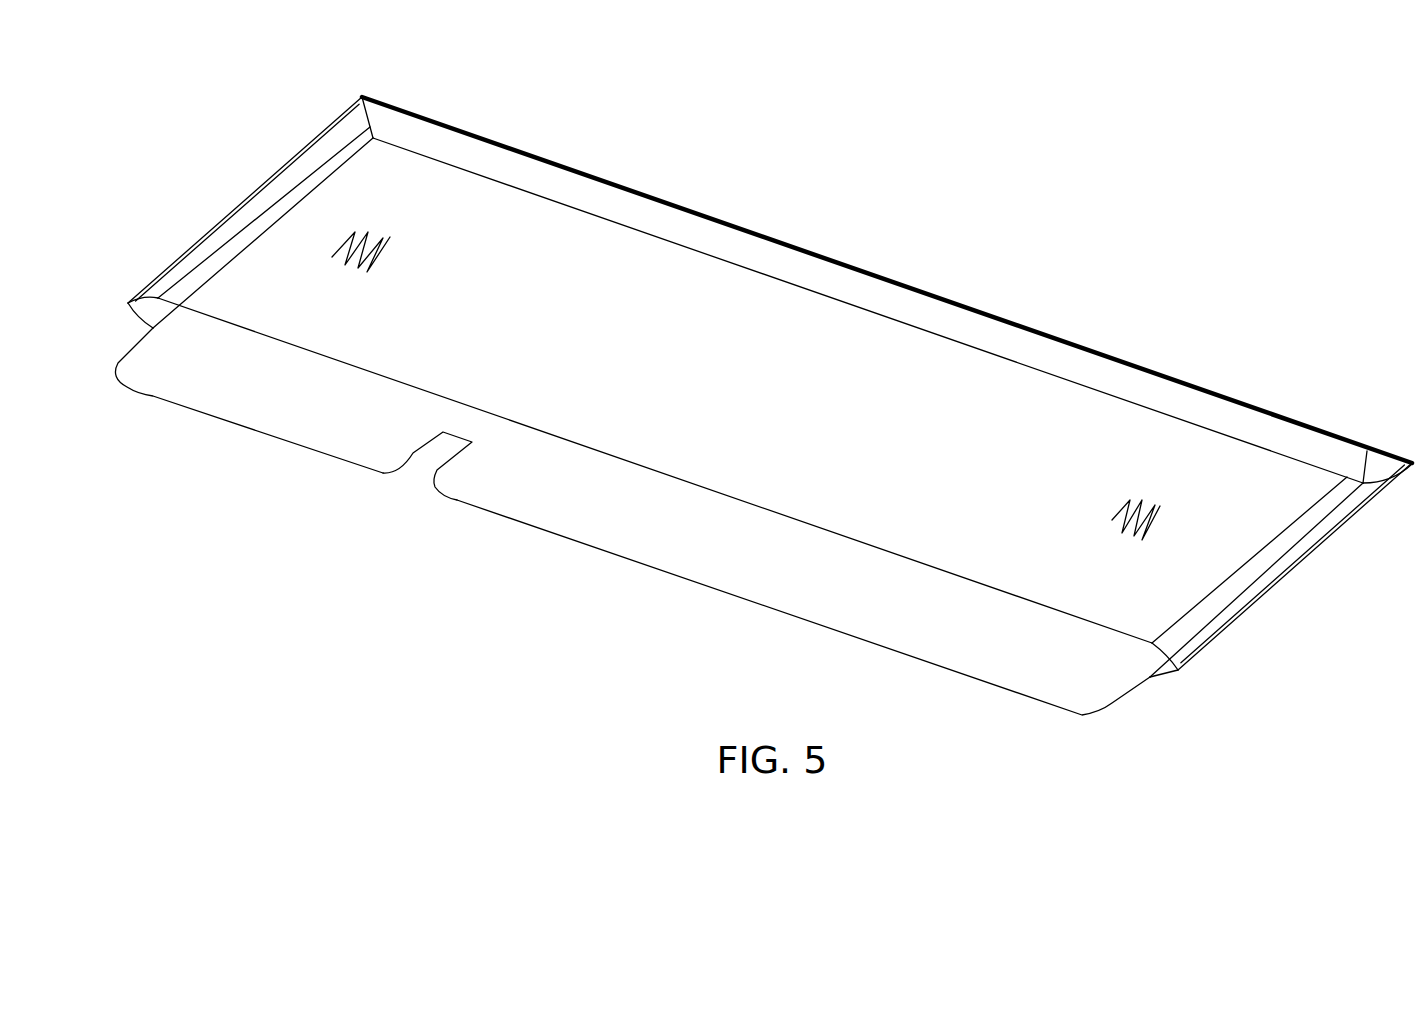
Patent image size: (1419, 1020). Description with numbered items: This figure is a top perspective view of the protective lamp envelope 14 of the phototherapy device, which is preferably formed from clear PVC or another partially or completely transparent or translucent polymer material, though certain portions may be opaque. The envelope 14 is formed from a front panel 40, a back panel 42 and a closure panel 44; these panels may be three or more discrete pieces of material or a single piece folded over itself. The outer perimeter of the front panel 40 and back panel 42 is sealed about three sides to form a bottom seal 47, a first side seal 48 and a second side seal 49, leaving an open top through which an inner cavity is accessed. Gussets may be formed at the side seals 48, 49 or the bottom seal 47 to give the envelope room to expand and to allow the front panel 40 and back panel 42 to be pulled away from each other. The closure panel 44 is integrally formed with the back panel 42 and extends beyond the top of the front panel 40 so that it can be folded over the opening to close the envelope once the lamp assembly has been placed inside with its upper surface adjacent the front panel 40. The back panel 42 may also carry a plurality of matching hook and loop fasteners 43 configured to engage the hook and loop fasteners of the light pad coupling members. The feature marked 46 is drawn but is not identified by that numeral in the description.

The protective lamp envelope 14 is at (1235, 333).
The front panel 40 is at (320, 248).
The back panel 42 is at (1298, 489).
The hook and loop fasteners 43 is at (383, 250).
The closure panel 44 is at (632, 521).
The notch 46 is at (675, 481).
The bottom seal 47 is at (794, 247).
The first side seal 48 is at (147, 287).
The second side seal 49 is at (1282, 580).